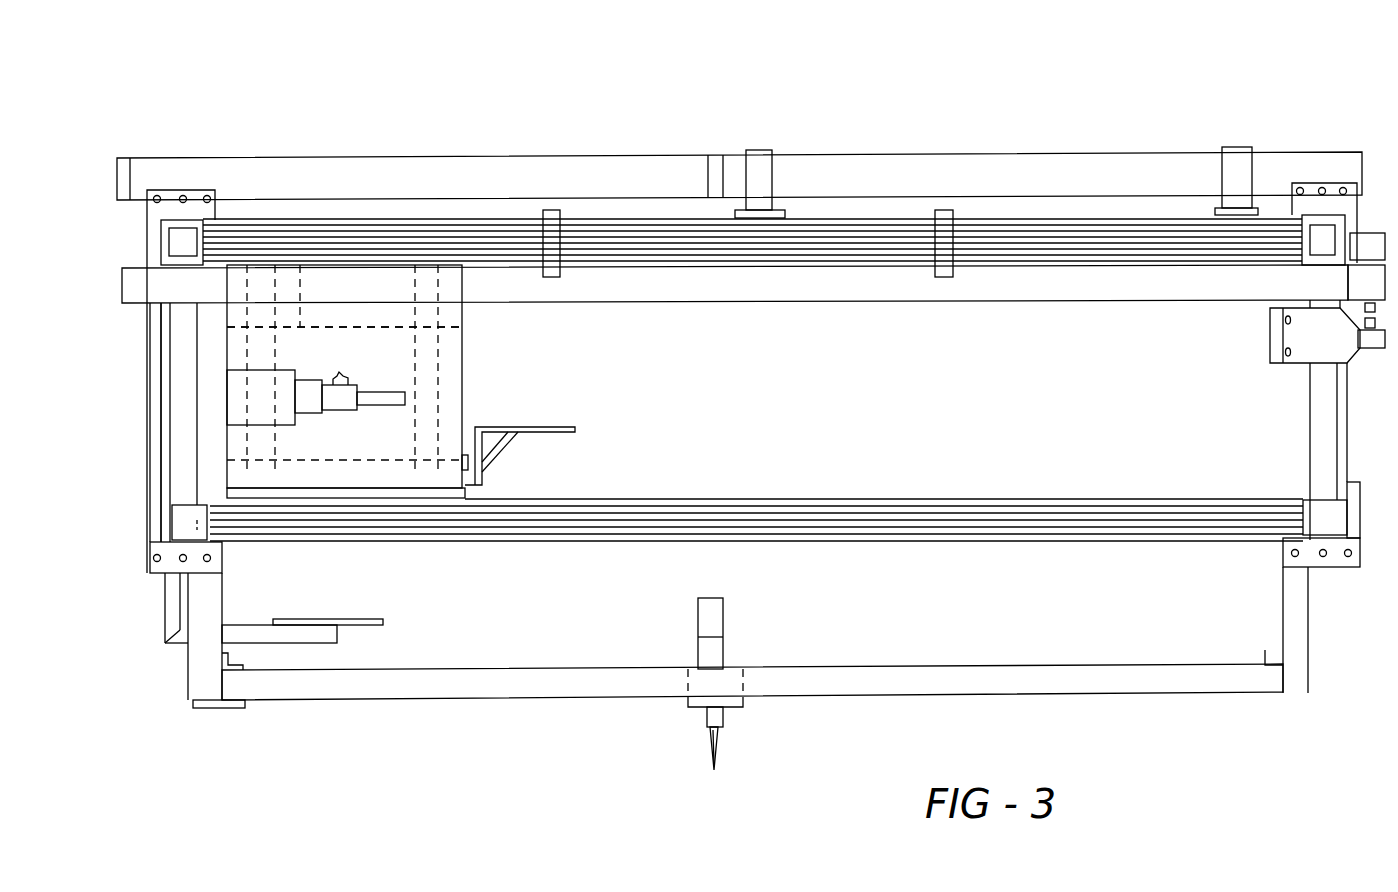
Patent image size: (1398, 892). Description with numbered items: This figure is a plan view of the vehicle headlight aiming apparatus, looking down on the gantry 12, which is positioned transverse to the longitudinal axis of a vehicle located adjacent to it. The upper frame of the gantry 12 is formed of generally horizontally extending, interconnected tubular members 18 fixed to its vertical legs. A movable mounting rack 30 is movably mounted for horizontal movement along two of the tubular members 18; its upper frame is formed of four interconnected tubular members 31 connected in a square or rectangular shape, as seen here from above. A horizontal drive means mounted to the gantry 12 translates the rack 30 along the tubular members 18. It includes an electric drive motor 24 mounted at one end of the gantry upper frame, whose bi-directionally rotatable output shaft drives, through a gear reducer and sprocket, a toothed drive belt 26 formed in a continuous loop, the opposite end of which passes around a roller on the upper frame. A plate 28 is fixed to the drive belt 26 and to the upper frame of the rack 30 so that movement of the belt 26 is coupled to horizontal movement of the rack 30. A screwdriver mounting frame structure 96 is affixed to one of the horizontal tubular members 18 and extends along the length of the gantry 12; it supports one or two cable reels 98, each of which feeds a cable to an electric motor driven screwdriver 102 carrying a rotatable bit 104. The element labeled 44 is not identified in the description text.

The gantry 12 is at (878, 88).
The horizontal tubular members 18 is at (585, 215).
The electric drive motor 24 is at (1270, 331).
The toothed drive belt 26 is at (740, 290).
The plate 28 is at (332, 277).
The movable mounting rack 30 is at (535, 367).
The tubular members 31 is at (465, 327).
The motor 44 is at (298, 401).
The screwdriver mounting frame structure 96 is at (280, 692).
The cable reel 98 is at (690, 707).
The electric motor driven screwdriver 102 is at (728, 628).
The rotatable bit 104 is at (720, 750).